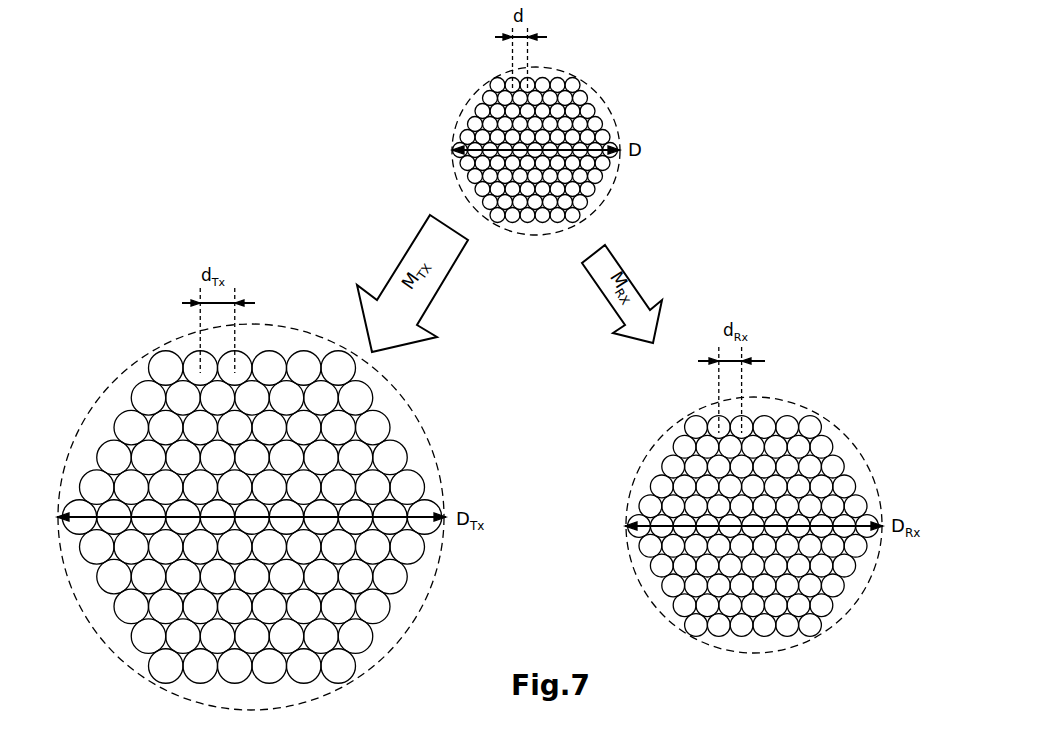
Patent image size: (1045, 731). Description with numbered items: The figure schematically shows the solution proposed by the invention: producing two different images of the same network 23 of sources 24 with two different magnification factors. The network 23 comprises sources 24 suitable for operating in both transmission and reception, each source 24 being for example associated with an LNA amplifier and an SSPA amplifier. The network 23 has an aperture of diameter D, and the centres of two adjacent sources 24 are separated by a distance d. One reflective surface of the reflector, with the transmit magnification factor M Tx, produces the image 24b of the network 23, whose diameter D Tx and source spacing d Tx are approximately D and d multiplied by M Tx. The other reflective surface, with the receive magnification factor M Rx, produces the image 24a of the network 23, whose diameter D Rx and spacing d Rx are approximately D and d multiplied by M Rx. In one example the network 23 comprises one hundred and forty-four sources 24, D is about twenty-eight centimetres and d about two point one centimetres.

The network of sources 23 is at (608, 188).
The source 24 is at (578, 97).
The image of the network of sources produced by the reflective surface 22a 24a is at (647, 463).
The image of the network of sources produced by the reflective surface 22b 24b is at (132, 373).